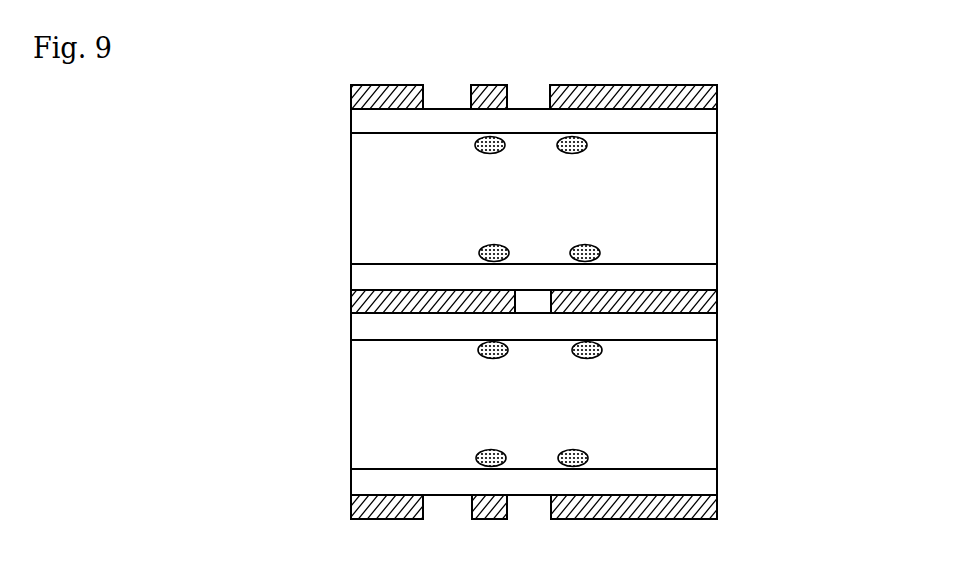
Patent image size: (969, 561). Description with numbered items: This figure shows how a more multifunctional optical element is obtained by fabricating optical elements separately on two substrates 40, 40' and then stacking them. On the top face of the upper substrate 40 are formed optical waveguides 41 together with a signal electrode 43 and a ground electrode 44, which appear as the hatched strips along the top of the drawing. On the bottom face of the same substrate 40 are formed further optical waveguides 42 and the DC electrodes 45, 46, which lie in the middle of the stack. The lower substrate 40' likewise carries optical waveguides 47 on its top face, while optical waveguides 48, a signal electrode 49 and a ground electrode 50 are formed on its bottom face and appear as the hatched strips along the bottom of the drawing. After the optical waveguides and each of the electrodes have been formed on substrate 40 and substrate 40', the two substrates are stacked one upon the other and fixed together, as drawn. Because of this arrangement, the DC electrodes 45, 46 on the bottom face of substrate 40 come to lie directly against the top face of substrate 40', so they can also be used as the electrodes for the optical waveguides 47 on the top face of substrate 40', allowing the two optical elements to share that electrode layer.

The substrate 40 is at (584, 186).
The substrate 40' is at (587, 417).
The optical waveguides 41 is at (575, 136).
The optical waveguides 42 is at (575, 250).
The signal electrode 43 is at (475, 85).
The ground electrode 44 is at (700, 83).
The DC electrode 45 is at (388, 302).
The DC electrode 46 is at (700, 293).
The optical waveguides 47 is at (570, 356).
The optical waveguides 48 is at (577, 470).
The signal electrode 49 is at (475, 520).
The ground electrode 50 is at (687, 520).